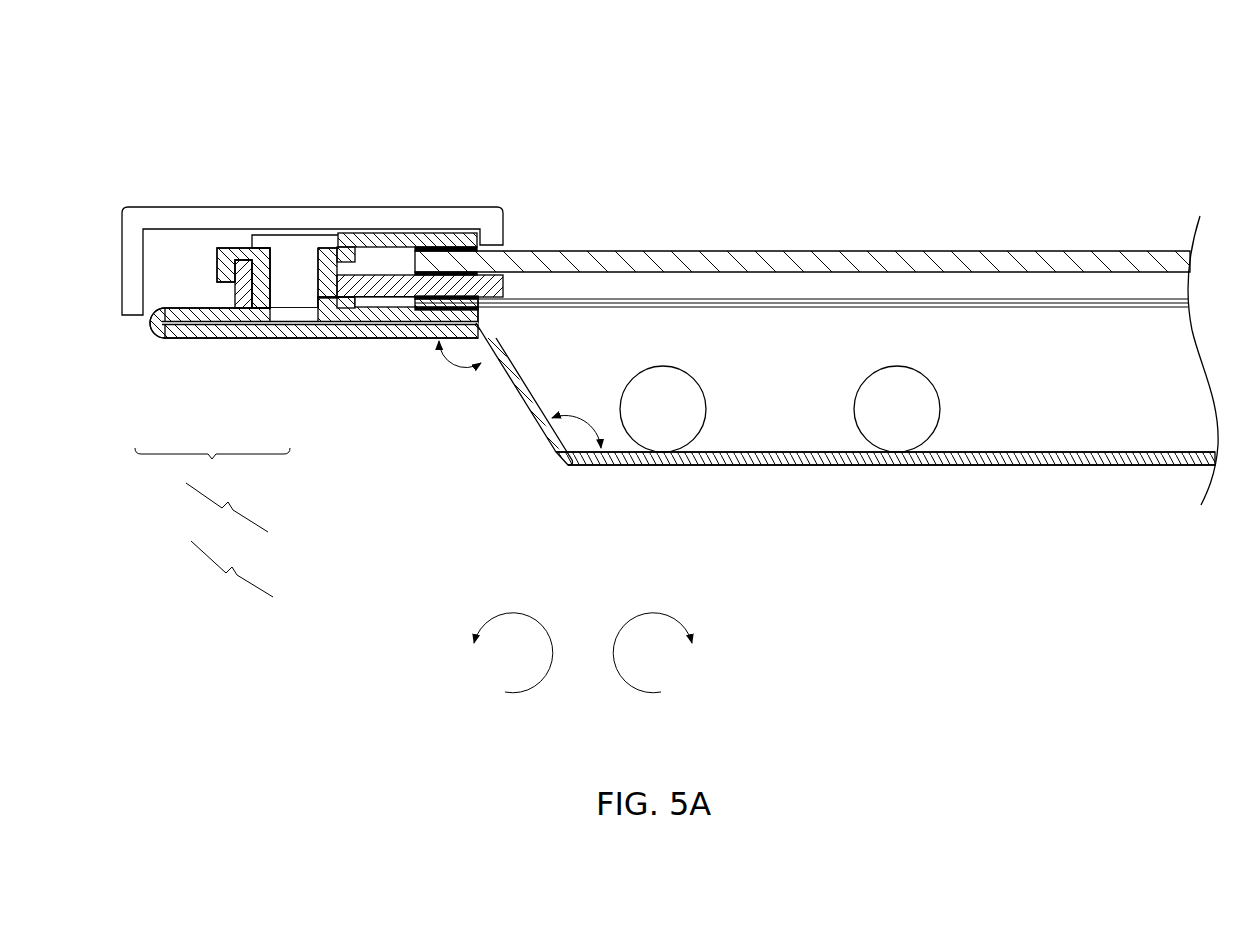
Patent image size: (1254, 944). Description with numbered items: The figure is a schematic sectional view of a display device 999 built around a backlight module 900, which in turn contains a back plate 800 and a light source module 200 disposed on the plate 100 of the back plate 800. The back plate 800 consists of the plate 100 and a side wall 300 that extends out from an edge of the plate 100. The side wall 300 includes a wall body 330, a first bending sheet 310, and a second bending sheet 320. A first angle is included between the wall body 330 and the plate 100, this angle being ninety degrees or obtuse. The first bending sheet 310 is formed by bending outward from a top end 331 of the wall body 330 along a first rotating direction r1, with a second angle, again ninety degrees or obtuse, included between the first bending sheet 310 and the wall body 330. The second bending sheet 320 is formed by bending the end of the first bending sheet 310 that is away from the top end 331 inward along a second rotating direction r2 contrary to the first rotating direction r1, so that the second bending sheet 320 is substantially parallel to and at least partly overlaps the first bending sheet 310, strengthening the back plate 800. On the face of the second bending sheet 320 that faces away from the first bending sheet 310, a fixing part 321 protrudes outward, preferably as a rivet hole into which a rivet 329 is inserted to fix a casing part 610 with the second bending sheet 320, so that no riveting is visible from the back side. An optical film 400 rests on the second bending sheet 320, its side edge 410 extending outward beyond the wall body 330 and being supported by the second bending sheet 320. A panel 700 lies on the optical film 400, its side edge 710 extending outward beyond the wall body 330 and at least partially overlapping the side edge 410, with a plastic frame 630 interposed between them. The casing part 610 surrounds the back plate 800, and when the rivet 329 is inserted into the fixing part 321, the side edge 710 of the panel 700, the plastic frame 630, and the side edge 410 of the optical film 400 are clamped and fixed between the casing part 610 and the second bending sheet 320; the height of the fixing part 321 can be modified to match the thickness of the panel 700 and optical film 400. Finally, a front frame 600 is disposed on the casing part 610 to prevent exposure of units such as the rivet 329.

The display device 999 is at (147, 63).
The front frame 600 is at (273, 217).
The second bending sheet 320 is at (200, 318).
The first bending sheet 310 is at (241, 335).
The fixing part 321 is at (258, 303).
The rivet 329 is at (300, 245).
The casing part 610 is at (368, 234).
The plastic frame 630 is at (390, 282).
The side edge of the optical film 410 is at (408, 305).
The panel 700 is at (843, 257).
The side edge of the panel 710 is at (460, 262).
The optical film 400 is at (620, 298).
The wall body 330 is at (508, 387).
The top end of the wall body 331 is at (500, 380).
The plate 100 is at (592, 466).
The light source module 200 is at (663, 432).
The side wall 300 is at (212, 467).
The back plate 800 is at (227, 512).
The backlight module 900 is at (232, 575).
The first rotating direction r1 is at (513, 641).
The second rotating direction r2 is at (652, 641).